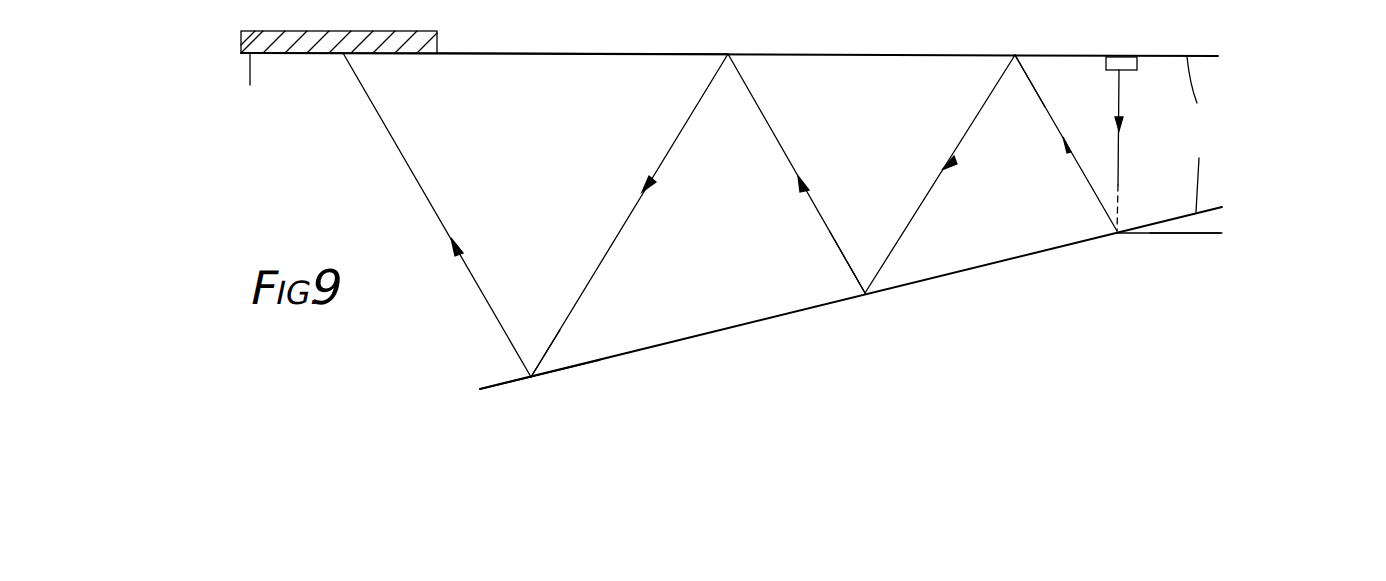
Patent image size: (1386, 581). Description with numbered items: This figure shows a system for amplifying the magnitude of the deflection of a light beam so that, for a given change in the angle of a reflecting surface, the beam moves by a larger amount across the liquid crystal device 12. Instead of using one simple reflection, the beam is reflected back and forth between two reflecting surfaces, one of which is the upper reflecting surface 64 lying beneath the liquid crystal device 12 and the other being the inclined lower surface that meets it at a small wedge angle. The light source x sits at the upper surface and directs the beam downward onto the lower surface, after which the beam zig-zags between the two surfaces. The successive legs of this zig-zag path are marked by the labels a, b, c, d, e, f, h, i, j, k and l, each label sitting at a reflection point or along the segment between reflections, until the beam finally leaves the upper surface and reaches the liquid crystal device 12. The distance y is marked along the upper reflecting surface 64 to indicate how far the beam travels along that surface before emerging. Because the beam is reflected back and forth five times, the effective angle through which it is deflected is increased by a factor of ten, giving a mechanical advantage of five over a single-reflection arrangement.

The liquid crystal device 12 is at (365, 30).
The reflecting surface 64 is at (782, 52).
The light source x is at (808, 45).
The first reflection point a is at (1148, 219).
The incident light ray b is at (1110, 150).
The reflected ray segment c is at (1047, 143).
The reflection point d is at (1024, 82).
The reflection point e is at (922, 176).
The reflection point f is at (849, 262).
The reflection point h is at (650, 215).
The reflection point i is at (794, 173).
The reflection point j is at (540, 361).
The reflection point k is at (542, 351).
The exit point l is at (437, 215).
The reflective surface length y is at (582, 32).